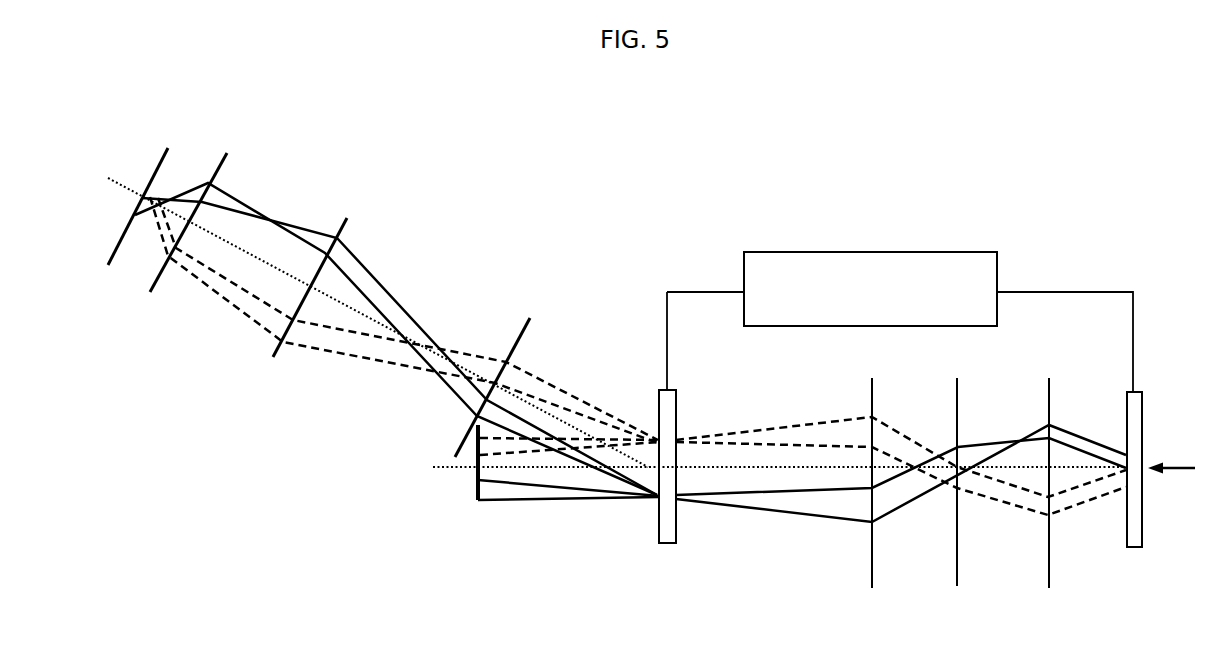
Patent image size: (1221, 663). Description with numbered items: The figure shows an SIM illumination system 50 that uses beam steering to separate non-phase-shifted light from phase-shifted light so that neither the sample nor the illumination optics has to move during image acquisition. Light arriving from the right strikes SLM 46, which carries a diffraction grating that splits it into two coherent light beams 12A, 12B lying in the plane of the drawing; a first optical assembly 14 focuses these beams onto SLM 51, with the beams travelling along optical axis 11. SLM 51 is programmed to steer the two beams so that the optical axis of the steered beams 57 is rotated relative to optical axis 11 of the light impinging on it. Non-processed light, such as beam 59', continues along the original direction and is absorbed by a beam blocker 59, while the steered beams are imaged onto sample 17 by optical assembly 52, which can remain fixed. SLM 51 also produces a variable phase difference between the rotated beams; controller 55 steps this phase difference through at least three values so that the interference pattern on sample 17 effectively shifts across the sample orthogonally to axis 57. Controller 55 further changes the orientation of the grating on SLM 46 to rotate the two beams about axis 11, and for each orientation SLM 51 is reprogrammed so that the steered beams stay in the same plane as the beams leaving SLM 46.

The illumination system 50 is at (158, 78).
The optical axis of the steered beams 57 is at (118, 180).
The sample 17 is at (113, 262).
The optical assembly 52 is at (132, 285).
The beam blocker 59 is at (444, 495).
The beam 59' is at (568, 500).
The SLM 51 is at (680, 518).
The controller 55 is at (797, 258).
The optical axis 11 is at (786, 470).
The first optical assembly 14 is at (872, 588).
The first coherent light beam 12A is at (1075, 445).
The second coherent light beam 12B is at (1083, 494).
The SLM 46 is at (1147, 410).